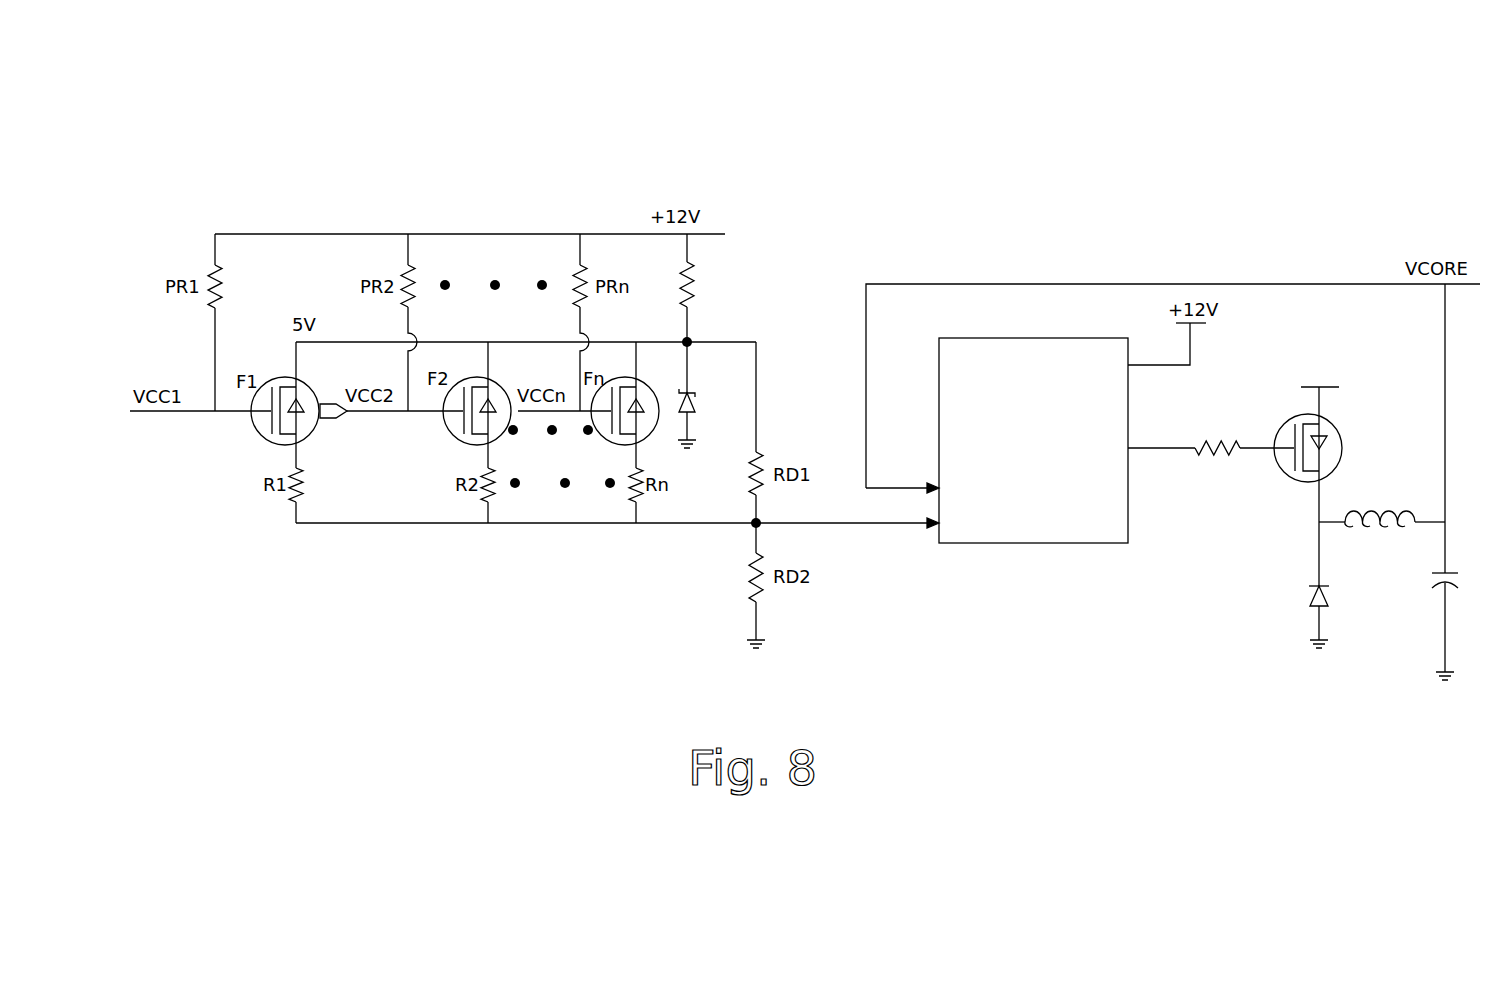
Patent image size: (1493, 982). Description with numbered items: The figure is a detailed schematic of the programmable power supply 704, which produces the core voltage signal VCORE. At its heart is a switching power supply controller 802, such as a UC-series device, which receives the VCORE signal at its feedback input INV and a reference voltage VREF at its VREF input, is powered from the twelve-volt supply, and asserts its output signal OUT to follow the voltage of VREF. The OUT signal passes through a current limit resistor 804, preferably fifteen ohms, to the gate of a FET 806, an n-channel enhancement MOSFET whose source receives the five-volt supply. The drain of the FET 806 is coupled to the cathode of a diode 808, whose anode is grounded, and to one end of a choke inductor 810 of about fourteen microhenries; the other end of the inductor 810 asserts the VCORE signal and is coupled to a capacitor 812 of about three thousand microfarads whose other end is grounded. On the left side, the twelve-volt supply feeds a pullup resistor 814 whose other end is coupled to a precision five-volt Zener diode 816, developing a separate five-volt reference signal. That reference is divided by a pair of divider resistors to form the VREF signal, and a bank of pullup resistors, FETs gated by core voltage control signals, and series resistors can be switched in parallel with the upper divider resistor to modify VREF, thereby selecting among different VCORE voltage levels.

The programmable power supply 704 is at (1175, 177).
The switching power supply controller 802 is at (1020, 338).
The current limit resistor 804 is at (1225, 455).
The FET 806 is at (1342, 448).
The diode 808 is at (1312, 597).
The choke inductor 810 is at (1362, 512).
The capacitor 812 is at (1432, 578).
The pullup resistor 814 is at (693, 283).
The precision five-volt Zener diode 816 is at (696, 402).